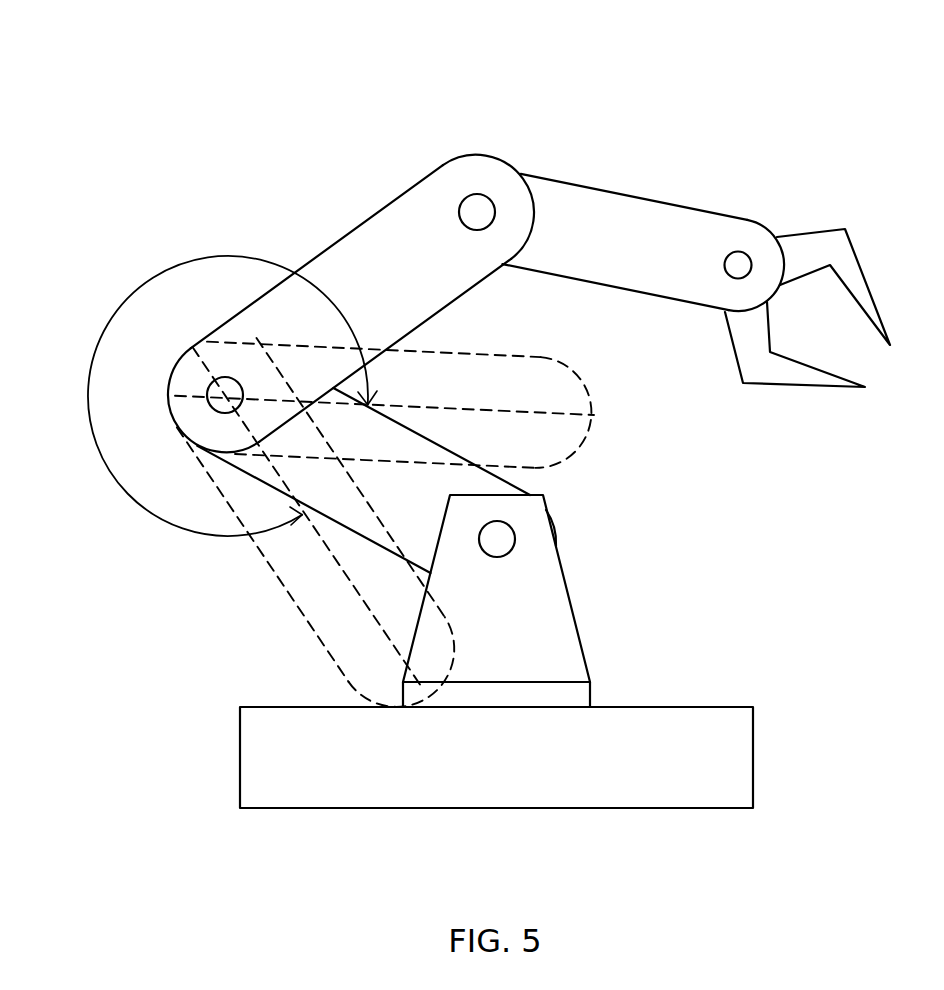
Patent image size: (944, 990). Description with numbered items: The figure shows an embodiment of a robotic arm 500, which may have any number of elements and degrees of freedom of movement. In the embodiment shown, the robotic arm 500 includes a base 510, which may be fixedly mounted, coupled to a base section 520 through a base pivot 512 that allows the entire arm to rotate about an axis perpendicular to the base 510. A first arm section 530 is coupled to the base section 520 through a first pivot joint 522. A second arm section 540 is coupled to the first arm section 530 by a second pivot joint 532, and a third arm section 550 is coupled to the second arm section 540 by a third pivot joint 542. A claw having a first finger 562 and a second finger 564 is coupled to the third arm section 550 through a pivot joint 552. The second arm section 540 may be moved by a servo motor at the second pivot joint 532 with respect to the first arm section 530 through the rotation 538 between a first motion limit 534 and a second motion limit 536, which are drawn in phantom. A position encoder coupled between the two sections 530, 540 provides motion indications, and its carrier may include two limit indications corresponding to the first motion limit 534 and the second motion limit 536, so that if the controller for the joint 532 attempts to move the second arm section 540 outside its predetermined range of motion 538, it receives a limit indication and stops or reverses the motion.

The robotic arm 500 is at (704, 101).
The base 510 is at (656, 781).
The base pivot 512 is at (594, 693).
The base section 520 is at (491, 643).
The first pivot joint 522 is at (503, 545).
The first arm section 530 is at (379, 507).
The second pivot joint 532 is at (214, 391).
The first motion limit 534 is at (298, 607).
The second motion limit 536 is at (566, 457).
The rotation 538 is at (204, 258).
The second arm section 540 is at (366, 294).
The third pivot joint 542 is at (466, 206).
The third arm section 550 is at (616, 271).
The pivot joint 552 is at (738, 256).
The first finger 562 is at (838, 242).
The second finger 564 is at (767, 370).